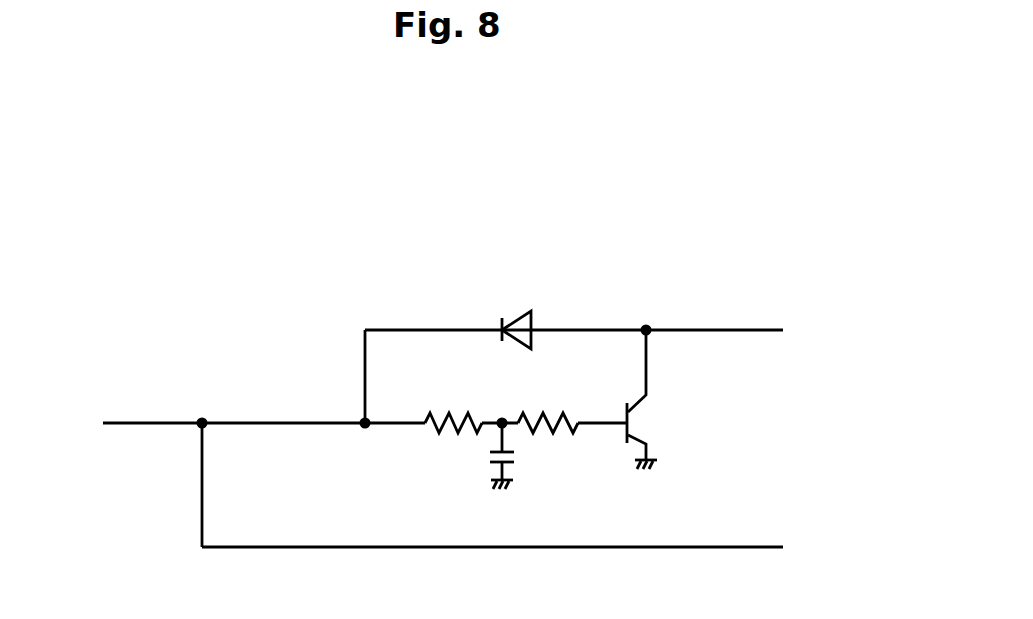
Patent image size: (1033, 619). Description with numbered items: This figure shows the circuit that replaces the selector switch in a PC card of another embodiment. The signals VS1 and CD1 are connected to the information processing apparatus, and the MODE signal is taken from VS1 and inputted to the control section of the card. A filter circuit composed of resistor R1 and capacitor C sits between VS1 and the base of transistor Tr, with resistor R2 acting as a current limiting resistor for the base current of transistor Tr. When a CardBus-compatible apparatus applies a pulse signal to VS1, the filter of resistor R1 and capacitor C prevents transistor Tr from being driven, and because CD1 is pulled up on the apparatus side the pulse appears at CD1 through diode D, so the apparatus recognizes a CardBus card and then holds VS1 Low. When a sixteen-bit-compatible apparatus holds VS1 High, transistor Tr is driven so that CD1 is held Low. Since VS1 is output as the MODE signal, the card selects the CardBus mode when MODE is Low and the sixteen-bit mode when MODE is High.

The diode D is at (517, 309).
The resistor R1 is at (453, 403).
The resistor R2 is at (548, 403).
The capacitor C is at (521, 456).
The transistor Tr is at (658, 399).
The VS1 signal VS1 is at (224, 426).
The CD1 signal CD1 is at (617, 330).
The MODE signal MODE is at (555, 548).